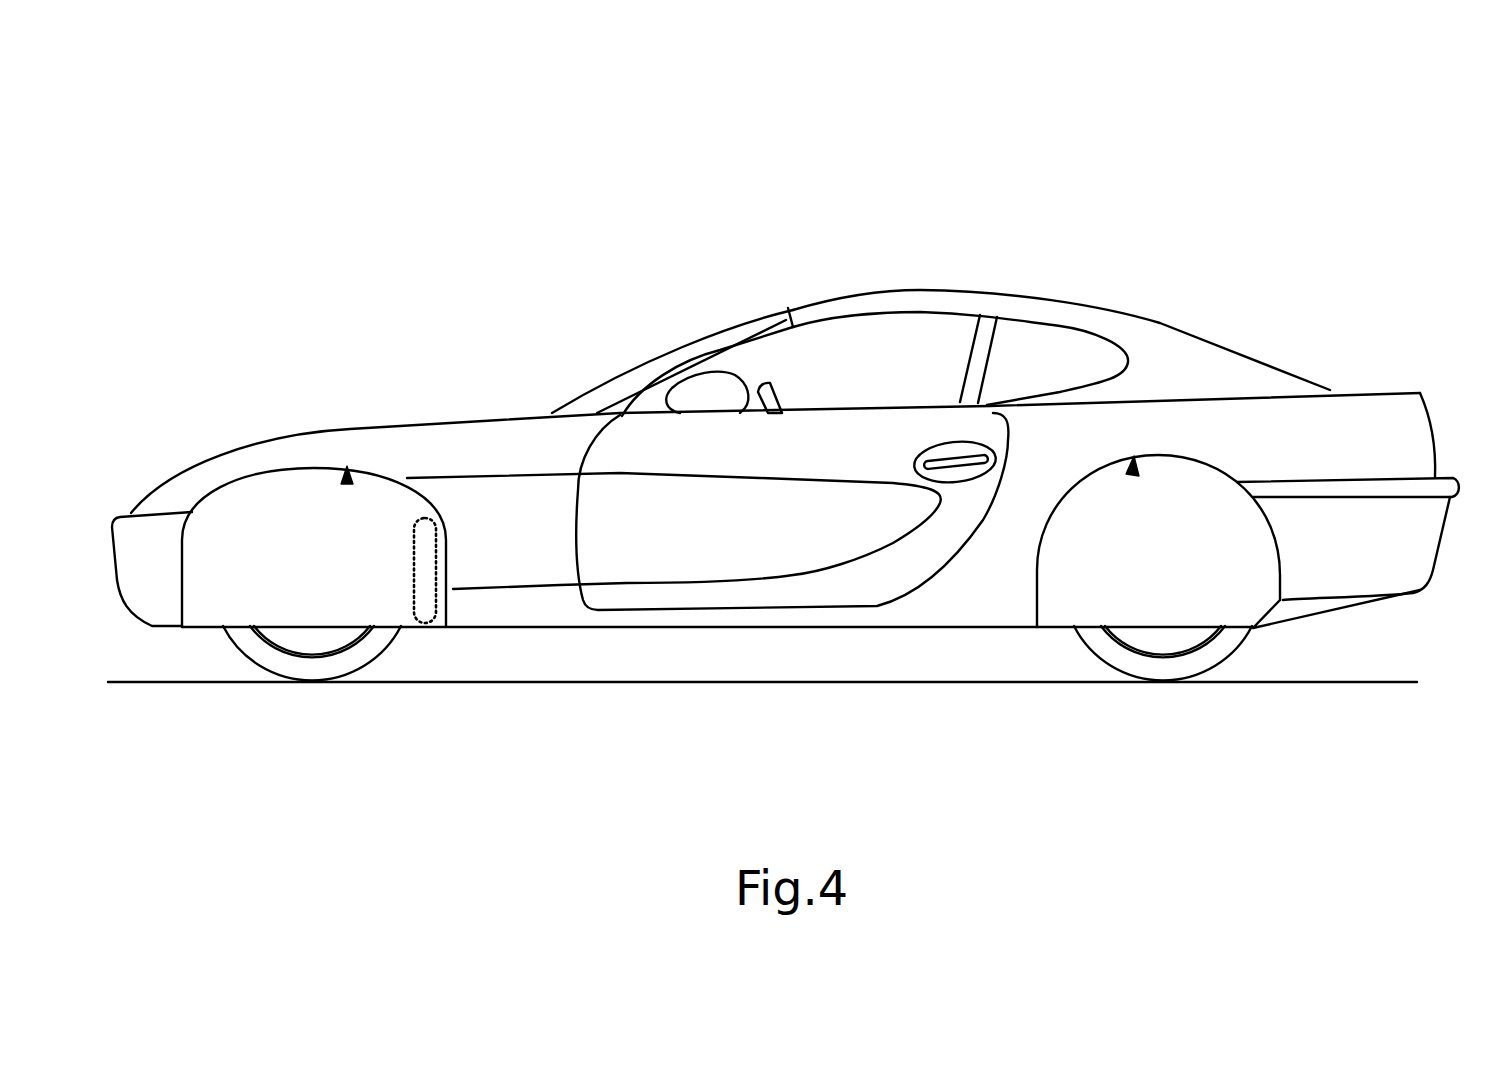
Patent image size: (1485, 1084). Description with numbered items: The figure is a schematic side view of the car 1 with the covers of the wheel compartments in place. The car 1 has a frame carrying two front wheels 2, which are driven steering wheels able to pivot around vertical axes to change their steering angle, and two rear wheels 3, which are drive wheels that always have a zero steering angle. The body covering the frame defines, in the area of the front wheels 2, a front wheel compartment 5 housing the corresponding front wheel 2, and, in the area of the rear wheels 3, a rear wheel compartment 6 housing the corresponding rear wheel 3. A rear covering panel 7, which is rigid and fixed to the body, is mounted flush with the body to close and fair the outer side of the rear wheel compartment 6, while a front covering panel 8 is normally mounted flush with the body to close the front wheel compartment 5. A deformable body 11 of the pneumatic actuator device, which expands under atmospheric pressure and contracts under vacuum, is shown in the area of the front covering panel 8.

The car 1 is at (783, 486).
The front wheel 2 is at (320, 663).
The rear wheel 3 is at (1165, 663).
The front wheel compartment 5 is at (347, 480).
The rear wheel compartment 6 is at (1132, 472).
The rear covering panel 7 is at (1166, 537).
The front covering panel 8 is at (308, 531).
The deformable body 11 is at (423, 583).